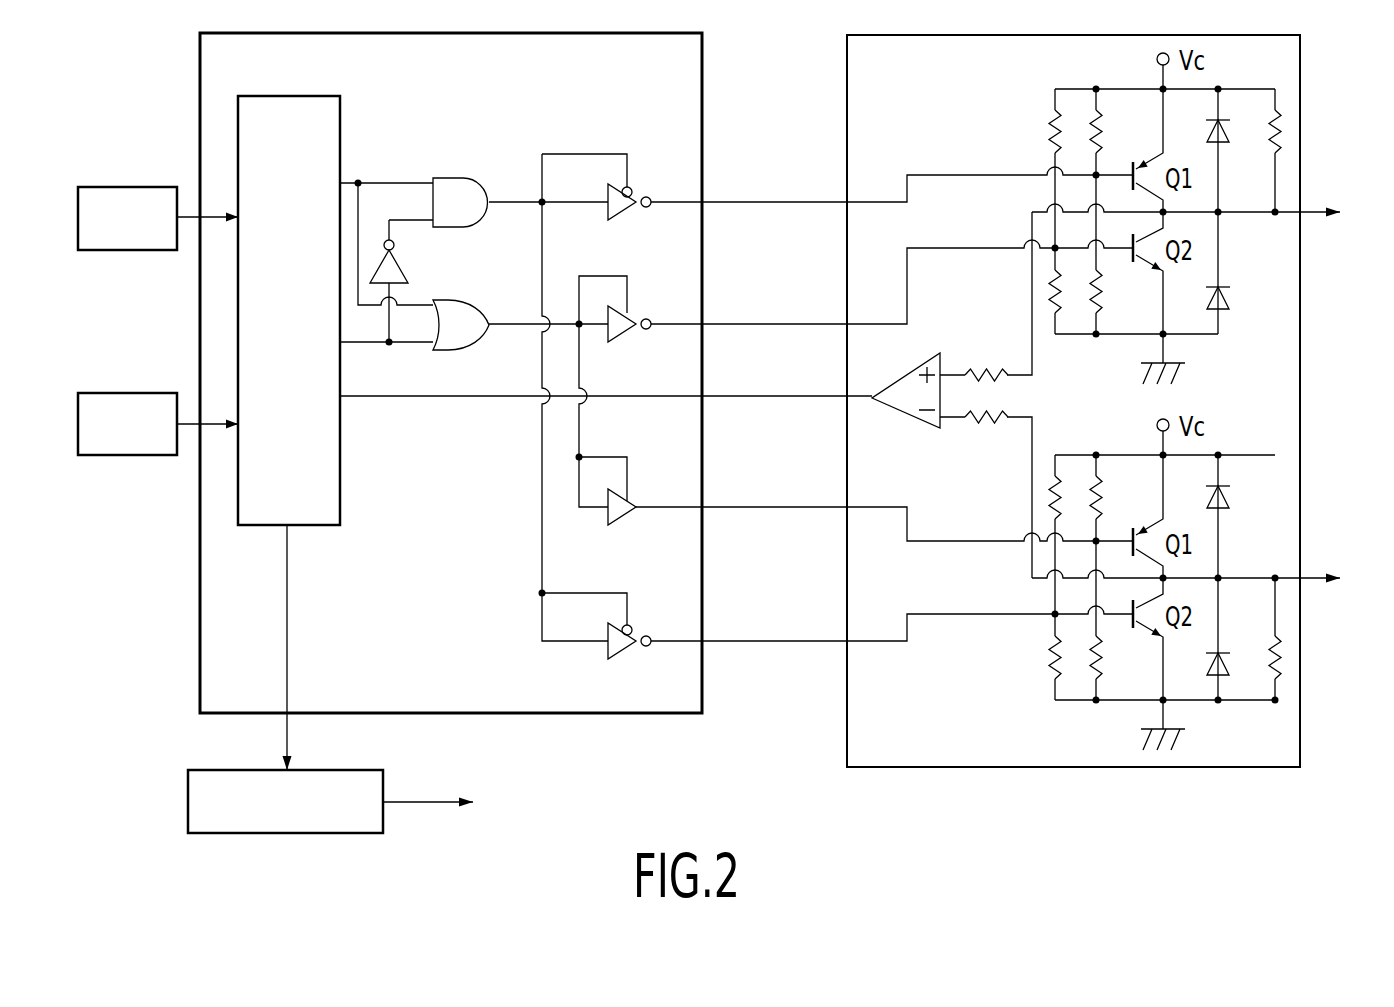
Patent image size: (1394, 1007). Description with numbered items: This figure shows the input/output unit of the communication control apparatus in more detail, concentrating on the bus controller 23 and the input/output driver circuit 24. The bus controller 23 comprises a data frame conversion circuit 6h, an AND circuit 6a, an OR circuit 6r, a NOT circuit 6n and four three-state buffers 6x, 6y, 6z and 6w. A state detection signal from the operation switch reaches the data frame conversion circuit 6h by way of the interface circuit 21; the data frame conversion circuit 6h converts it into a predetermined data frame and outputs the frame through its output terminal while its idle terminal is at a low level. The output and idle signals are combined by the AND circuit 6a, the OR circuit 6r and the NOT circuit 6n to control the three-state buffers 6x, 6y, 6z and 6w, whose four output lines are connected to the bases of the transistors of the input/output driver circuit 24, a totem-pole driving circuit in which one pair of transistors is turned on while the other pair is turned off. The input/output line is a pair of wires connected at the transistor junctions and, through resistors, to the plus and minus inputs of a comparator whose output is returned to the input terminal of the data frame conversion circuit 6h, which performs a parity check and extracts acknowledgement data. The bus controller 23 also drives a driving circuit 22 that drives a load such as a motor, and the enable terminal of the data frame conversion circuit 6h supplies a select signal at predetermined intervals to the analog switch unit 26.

The interface circuit 21 is at (110, 187).
The driving circuit 22 is at (122, 393).
The bus controller 23 is at (200, 57).
The input/output driver circuit 24 is at (847, 52).
The analog switch unit 26 is at (188, 797).
The data frame conversion circuit 6h is at (298, 96).
The AND circuit 6a is at (453, 178).
The NOT circuit 6n is at (402, 258).
The OR circuit 6r is at (450, 352).
The 3-state buffer 6x is at (625, 212).
The 3-state buffer 6y is at (625, 338).
The 3-state buffer 6z is at (625, 515).
The 3-state buffer 6w is at (625, 650).